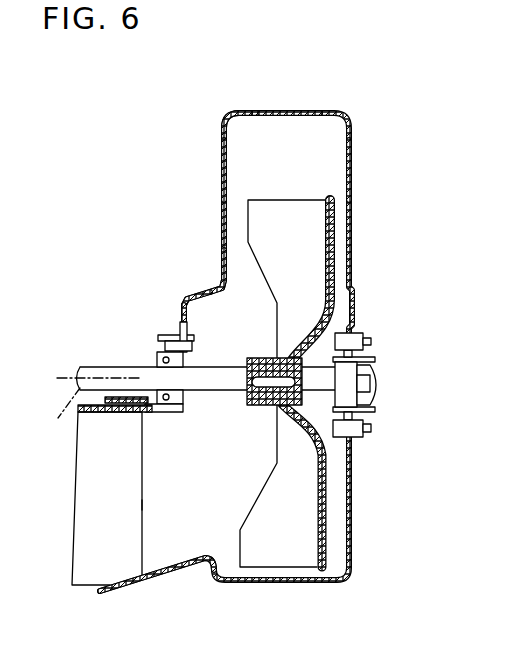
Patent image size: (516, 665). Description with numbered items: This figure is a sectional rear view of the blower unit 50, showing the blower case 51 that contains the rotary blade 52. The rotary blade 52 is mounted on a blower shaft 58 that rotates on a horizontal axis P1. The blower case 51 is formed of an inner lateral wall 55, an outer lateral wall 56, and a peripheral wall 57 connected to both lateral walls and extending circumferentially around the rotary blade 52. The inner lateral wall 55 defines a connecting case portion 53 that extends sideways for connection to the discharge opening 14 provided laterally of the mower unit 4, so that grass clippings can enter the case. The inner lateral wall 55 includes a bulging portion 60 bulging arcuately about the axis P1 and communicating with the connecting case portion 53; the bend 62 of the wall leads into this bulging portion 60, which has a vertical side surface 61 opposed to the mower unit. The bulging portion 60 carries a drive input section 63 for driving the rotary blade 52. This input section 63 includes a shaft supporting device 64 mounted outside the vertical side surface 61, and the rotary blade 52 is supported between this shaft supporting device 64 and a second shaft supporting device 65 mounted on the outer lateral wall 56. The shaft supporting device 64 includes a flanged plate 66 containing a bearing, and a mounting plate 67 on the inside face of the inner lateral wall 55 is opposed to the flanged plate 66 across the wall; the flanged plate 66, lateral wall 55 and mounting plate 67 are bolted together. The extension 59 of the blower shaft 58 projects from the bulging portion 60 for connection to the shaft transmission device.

The housing frame 50 is at (219, 114).
The blower case 51 is at (235, 112).
The rotary blade 52 is at (317, 243).
The connecting case portion 53 is at (189, 568).
The inner lateral wall 55 is at (221, 150).
The outer lateral wall 56 is at (352, 163).
The peripheral wall 57 is at (295, 112).
The blower shaft 58 is at (229, 392).
The extension 59 is at (78, 367).
The bulging portion 60 is at (181, 286).
The vertical side surface 61 is at (178, 307).
The bend of side wall 62 is at (213, 277).
The drive input section 63 is at (142, 353).
The shaft supporting device 64 is at (158, 412).
The shaft supporting device 65 is at (370, 358).
The flanged plate 66 is at (173, 330).
The mounting plate 67 is at (193, 329).
The workpiece support 4 is at (82, 562).
The discharge opening 14 is at (128, 505).
The horizontal axis P1 is at (56, 415).